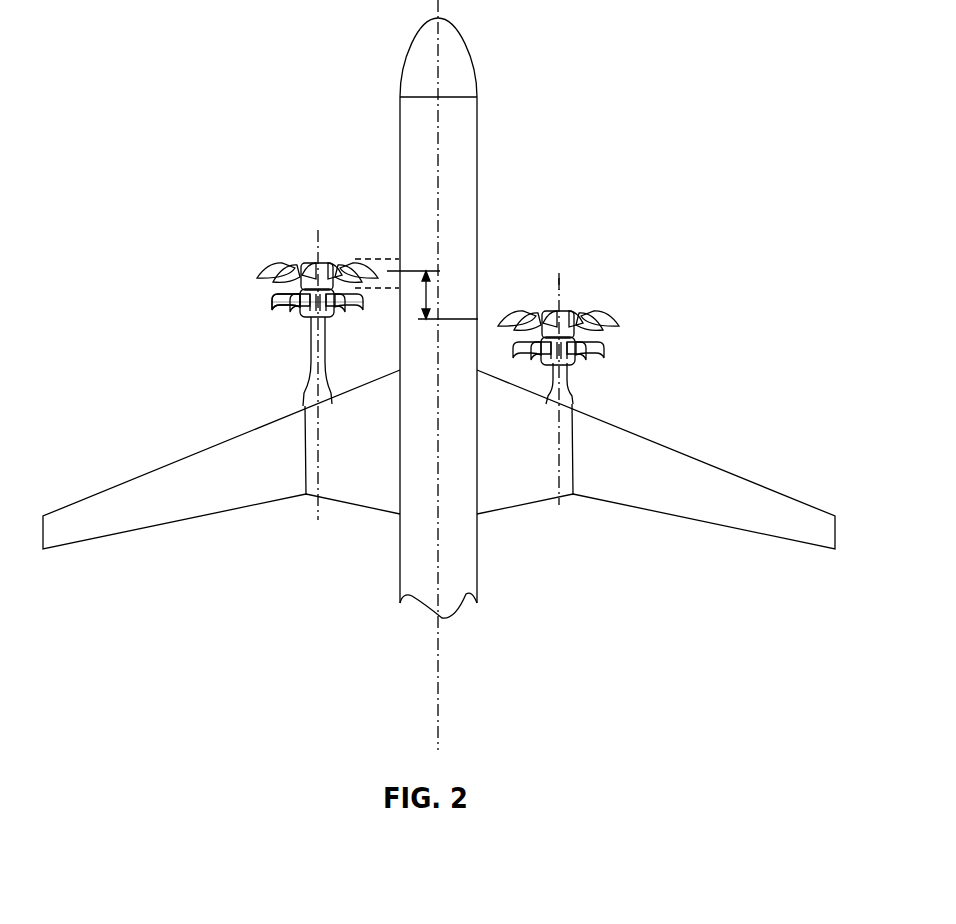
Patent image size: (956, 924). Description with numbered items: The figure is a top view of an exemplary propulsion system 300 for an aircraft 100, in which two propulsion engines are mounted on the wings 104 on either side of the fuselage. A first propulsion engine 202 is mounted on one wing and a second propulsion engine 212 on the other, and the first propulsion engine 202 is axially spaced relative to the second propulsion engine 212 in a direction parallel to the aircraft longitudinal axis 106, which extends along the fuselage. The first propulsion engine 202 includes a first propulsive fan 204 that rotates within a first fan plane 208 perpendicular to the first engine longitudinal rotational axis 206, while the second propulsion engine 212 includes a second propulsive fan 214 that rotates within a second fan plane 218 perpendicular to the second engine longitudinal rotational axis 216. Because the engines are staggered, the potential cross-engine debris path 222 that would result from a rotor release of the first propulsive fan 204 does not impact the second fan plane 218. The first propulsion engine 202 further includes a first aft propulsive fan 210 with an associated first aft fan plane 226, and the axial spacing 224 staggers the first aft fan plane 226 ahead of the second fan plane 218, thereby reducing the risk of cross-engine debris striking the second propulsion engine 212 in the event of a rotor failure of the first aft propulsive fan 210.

The aircraft 100 is at (439, 375).
The wings 104 is at (155, 468).
The longitudinal axis 106 is at (438, 160).
The first propulsion engine 202 is at (307, 383).
The first propulsive fan 204 is at (282, 263).
The first engine longitudinal rotational axis 206 is at (317, 232).
The first fan plane 208 is at (243, 273).
The first aft propulsive fan 210 is at (277, 306).
The second propulsion engine 212 is at (577, 400).
The second propulsive fan 214 is at (597, 313).
The second engine longitudinal rotational axis 216 is at (562, 293).
The second fan plane 218 is at (623, 322).
The potential cross-engine debris path 222 is at (385, 266).
The axial spacing 224 is at (428, 292).
The first aft fan plane 226 is at (243, 302).
The propulsion system 300 is at (220, 359).